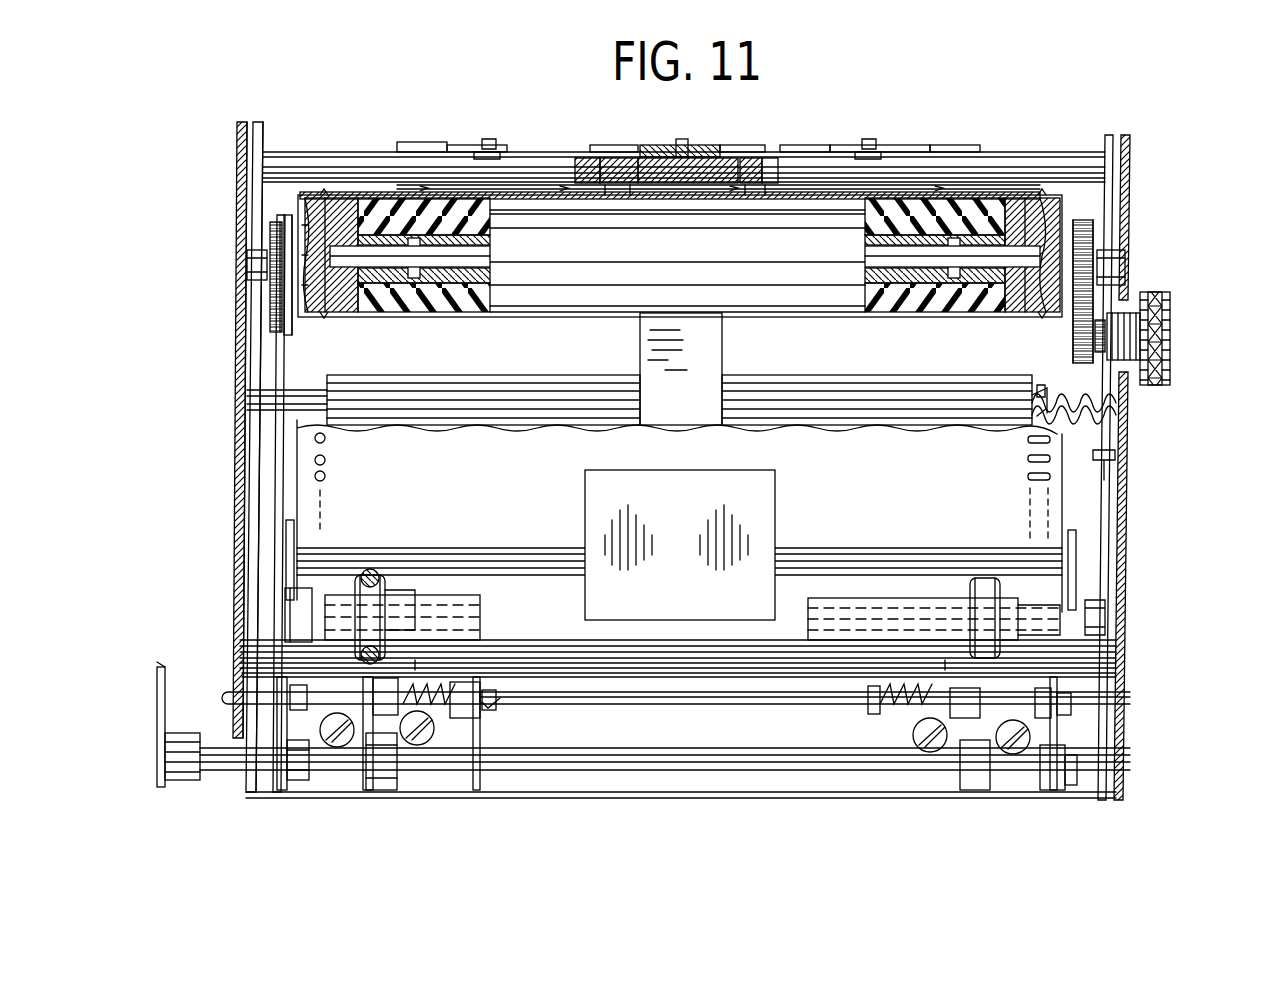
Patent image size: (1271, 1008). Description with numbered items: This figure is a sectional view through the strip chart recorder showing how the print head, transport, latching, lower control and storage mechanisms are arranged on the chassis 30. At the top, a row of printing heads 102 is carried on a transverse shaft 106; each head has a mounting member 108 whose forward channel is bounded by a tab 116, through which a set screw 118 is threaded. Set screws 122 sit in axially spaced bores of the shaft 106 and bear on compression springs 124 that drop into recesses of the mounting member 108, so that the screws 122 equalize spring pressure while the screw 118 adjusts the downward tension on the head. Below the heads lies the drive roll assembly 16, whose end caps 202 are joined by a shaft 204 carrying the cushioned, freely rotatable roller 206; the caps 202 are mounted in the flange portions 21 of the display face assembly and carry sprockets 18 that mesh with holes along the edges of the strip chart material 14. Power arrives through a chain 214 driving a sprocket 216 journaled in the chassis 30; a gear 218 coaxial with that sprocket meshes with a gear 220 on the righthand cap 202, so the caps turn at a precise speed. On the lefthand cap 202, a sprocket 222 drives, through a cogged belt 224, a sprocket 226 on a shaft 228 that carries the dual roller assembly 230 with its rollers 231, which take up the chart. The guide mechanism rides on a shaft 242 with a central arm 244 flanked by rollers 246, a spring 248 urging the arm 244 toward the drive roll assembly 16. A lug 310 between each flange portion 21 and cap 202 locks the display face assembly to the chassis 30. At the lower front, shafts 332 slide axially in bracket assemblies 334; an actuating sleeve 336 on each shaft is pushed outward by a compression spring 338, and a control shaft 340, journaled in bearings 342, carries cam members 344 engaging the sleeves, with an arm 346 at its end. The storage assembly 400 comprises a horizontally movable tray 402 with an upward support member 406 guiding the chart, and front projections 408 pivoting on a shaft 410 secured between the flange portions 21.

The strip chart material 14 is at (988, 195).
The drive roll assembly 16 is at (535, 316).
The sprockets 18 is at (328, 315).
The flange portions 21 is at (238, 197).
The chassis 30 is at (256, 124).
The printing heads 102 is at (432, 126).
The shaft 106 is at (348, 160).
The mounting member 108 is at (609, 145).
The tab 116 is at (665, 146).
The set screw 118 is at (688, 142).
The set screw 122 is at (588, 160).
The compression spring 124 is at (620, 200).
The end caps 202 is at (300, 292).
The shaft 204 is at (492, 262).
The roller 206 is at (376, 313).
The chain 214 is at (1160, 340).
The sprocket 216 is at (1160, 367).
The gear 218 is at (1083, 345).
The gear 220 is at (1085, 246).
The sprocket 222 is at (276, 241).
The cogged belt 224 is at (270, 479).
The sprocket 226 is at (254, 629).
The shaft 228 is at (1082, 622).
The dual roller assembly 230 is at (892, 609).
The rollers 231 is at (368, 572).
The shaft 242 is at (256, 399).
The arm 244 is at (715, 377).
The rollers 246 is at (502, 394).
The spring 248 is at (1118, 427).
The lug 310 is at (250, 263).
The shafts 332 is at (224, 690).
The bracket assembly 334 is at (490, 732).
The actuating sleeve 336 is at (410, 706).
The compression spring 338 is at (496, 696).
The control shaft 340 is at (568, 764).
The bearings 342 is at (300, 771).
The cam member 344 is at (378, 796).
The arm 346 is at (162, 693).
The storage assembly 400 is at (808, 545).
The tray 402 is at (290, 534).
The support member 406 is at (590, 492).
The projections 408 is at (418, 610).
The shaft 410 is at (652, 657).